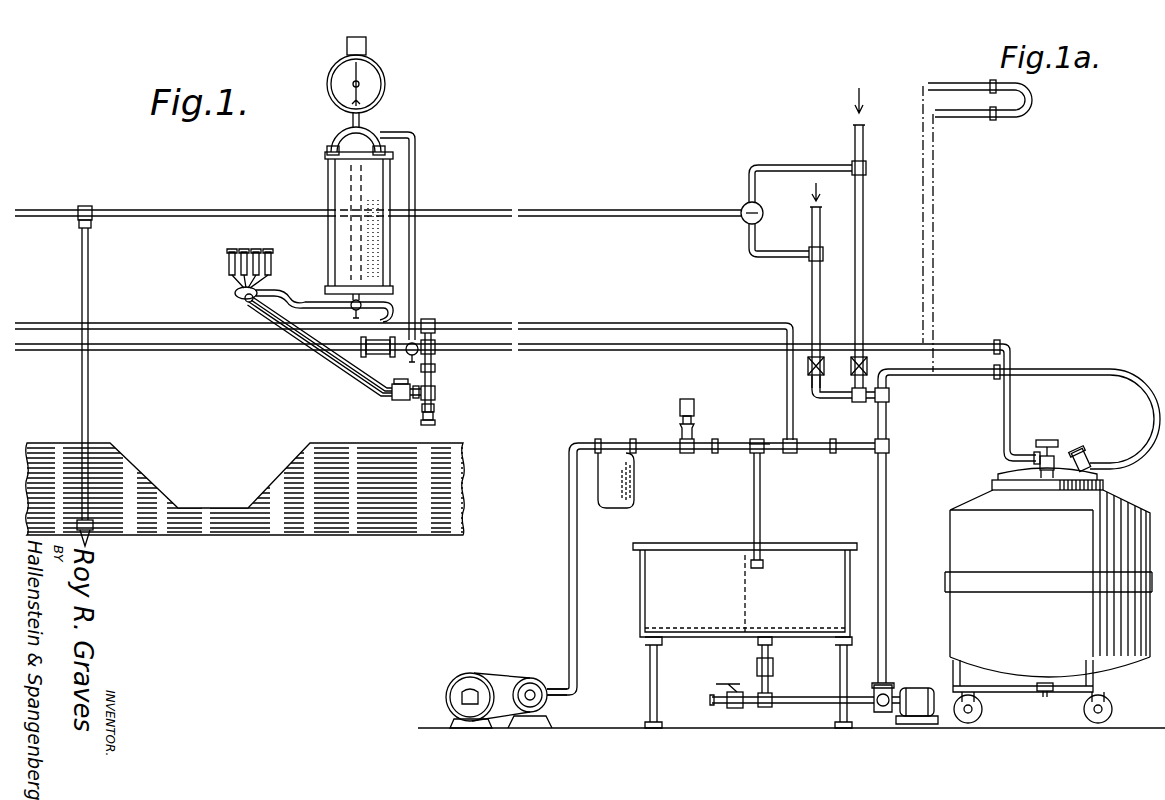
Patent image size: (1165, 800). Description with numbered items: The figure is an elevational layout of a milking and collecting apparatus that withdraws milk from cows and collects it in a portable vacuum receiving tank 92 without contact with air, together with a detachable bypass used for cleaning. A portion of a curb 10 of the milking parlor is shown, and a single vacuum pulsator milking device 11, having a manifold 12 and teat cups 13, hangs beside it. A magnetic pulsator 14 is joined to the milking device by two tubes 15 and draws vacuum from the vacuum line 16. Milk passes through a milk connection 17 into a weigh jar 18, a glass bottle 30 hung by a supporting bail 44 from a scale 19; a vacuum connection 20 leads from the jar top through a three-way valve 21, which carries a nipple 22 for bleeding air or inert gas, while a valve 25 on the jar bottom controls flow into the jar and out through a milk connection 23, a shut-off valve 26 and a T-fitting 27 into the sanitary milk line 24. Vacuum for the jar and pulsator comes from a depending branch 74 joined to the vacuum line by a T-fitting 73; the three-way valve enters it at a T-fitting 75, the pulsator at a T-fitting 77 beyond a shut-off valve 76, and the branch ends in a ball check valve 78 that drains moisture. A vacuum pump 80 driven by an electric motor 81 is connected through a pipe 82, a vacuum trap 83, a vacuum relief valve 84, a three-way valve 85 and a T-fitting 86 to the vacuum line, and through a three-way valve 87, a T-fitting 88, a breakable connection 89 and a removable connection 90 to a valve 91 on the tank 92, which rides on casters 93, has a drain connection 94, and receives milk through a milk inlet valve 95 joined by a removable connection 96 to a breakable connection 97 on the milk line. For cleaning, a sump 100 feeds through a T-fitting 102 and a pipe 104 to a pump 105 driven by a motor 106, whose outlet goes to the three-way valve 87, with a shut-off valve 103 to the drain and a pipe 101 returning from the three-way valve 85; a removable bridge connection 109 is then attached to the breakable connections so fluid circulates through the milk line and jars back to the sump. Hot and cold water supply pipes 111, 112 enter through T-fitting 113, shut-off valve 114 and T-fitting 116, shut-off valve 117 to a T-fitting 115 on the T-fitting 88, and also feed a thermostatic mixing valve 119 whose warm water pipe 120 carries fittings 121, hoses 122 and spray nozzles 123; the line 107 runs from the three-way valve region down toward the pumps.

In FIG. 1, the curb 10 is at (331, 520).
In FIG. 1, the vacuum pulsator milking device 11 is at (215, 268).
In FIG. 1, the manifold 12 is at (235, 294).
In FIG. 1, the teat cups 13 is at (232, 250).
In FIG. 1, the magnetic pulsator 14 is at (402, 401).
In FIG. 1, the tubes 15 is at (345, 362).
In FIG. 1, the vacuum line 16 is at (500, 322).
In FIG. 1, the milk connection 17 is at (298, 292).
In FIG. 1, the weigh jar 18 is at (318, 178).
In FIG. 1, the scale 19 is at (386, 84).
In FIG. 1, the vacuum connection 20 is at (418, 240).
In FIG. 1, the three-way valve 21 is at (411, 362).
In FIG. 1, the nipple 22 is at (388, 358).
In FIG. 1, the milk connection 23 is at (388, 312).
In FIG. 1, the sanitary milk line 24 is at (553, 351).
In FIG. 1, the valve 25 is at (350, 308).
In FIG. 1, the shut-off valve 26 is at (330, 352).
In FIG. 1, the T-fitting 27 is at (372, 386).
In FIG. 1, the glass bottle 30 is at (334, 234).
In FIG. 1, the supporting bail 44 is at (334, 134).
In FIG. 1, the T-fitting 73 is at (432, 318).
In FIG. 1, the branch 74 is at (436, 364).
In FIG. 1, the T-fitting 75 is at (437, 342).
In FIG. 1, the shut-off valve 76 is at (440, 386).
In FIG. 1, the T-fitting 77 is at (436, 404).
In FIG. 1, the ball check valve 78 is at (436, 418).
In FIG. 1, the vacuum pump 80 is at (534, 690).
In FIG. 1, the electric motor 81 is at (474, 690).
In FIG. 1, the pipe 82 is at (569, 576).
In FIG. 1, the vacuum trap 83 is at (630, 487).
In FIG. 1, the vacuum relief valve 84 is at (695, 412).
In FIG. 1, the three-way valve 85 is at (755, 454).
In FIG. 1, the T-fitting 86 is at (797, 453).
In FIG. 1, the three-way valve 87 is at (890, 444).
In FIG. 1, the T-fitting 88 is at (890, 397).
In FIG. 1, the breakable connection 89 is at (996, 378).
In FIG. 1A, the breakable connection 89 is at (997, 120).
In FIG. 1, the removable connection 90 is at (1158, 424).
In FIG. 1, the valve 91 is at (1084, 452).
In FIG. 1, the portable vacuum receiving tank 92 is at (958, 520).
In FIG. 1, the casters 93 is at (972, 723).
In FIG. 1, the drain connection 94 is at (1045, 697).
In FIG. 1, the milk inlet valve 95 is at (1048, 440).
In FIG. 1, the removable connection 96 is at (1013, 398).
In FIG. 1, the breakable connection 97 is at (996, 341).
In FIG. 1A, the breakable connection 97 is at (990, 80).
In FIG. 1, the sump 100 is at (812, 565).
In FIG. 1, the pipe 101 is at (754, 518).
In FIG. 1, the T-fitting 102 is at (764, 708).
In FIG. 1, the shut-off valve 103 is at (740, 710).
In FIG. 1, the pipe 104 is at (817, 697).
In FIG. 1, the pump 105 is at (890, 686).
In FIG. 1, the motor 106 is at (908, 694).
In FIG. 1, the pipe 107 is at (887, 602).
In FIG. 1A, the removable bridge connection 109 is at (1035, 114).
In FIG. 1, the hot water supply pipe 111 is at (855, 140).
In FIG. 1, the cold water supply pipe 112 is at (822, 236).
In FIG. 1, the T-fitting 113 is at (868, 170).
In FIG. 1, the shut-off valve 114 is at (866, 374).
In FIG. 1, the T-fitting 115 is at (858, 402).
In FIG. 1, the T-fitting 116 is at (811, 260).
In FIG. 1, the shut-off valve 117 is at (806, 368).
In FIG. 1, the thermostatic mixing valve 119 is at (760, 206).
In FIG. 1, the pipe 120 is at (586, 210).
In FIG. 1, the fittings 121 is at (89, 206).
In FIG. 1, the hoses 122 is at (90, 410).
In FIG. 1, the spray nozzles 123 is at (92, 530).